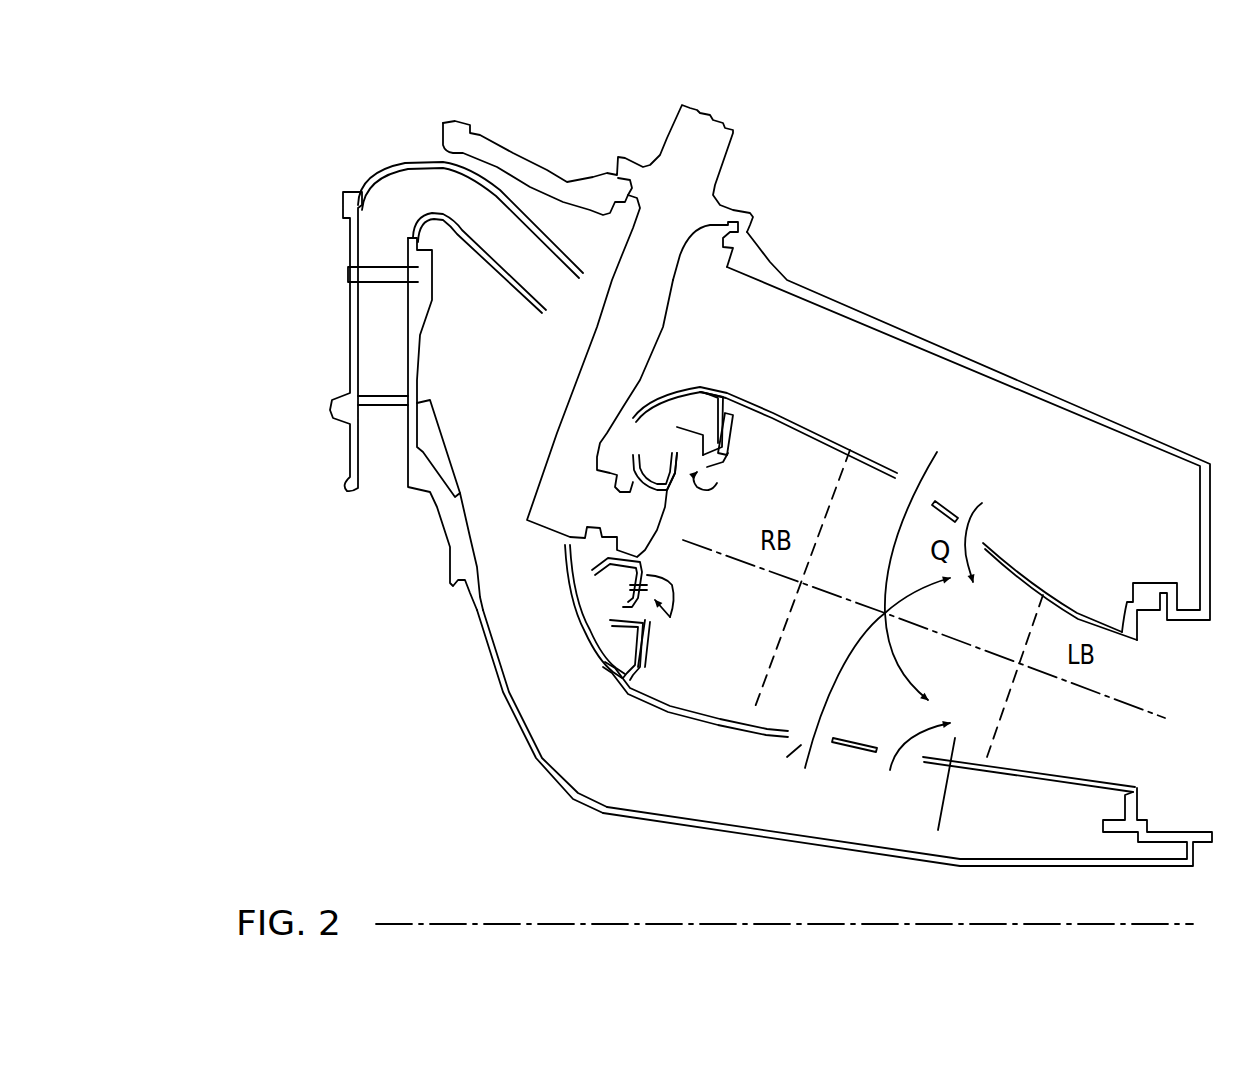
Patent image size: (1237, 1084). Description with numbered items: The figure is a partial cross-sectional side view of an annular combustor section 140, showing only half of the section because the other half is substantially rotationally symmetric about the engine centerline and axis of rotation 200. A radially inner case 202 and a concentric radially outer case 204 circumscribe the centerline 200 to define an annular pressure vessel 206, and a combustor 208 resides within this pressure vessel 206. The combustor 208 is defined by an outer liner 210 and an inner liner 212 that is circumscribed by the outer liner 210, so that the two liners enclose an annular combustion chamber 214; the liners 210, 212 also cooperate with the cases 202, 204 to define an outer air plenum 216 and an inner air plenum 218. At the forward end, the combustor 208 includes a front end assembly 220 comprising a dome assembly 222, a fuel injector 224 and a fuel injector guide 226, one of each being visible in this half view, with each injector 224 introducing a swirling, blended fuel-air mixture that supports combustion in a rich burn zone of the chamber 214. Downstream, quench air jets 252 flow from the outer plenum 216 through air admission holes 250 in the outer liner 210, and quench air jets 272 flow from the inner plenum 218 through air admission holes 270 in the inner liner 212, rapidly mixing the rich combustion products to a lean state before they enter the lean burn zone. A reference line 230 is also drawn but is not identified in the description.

The combustor section 140 is at (267, 230).
The engine centerline and axis of rotation 200 is at (532, 922).
The radially inner case 202 is at (663, 827).
The radially outer case 204 is at (877, 318).
The annular pressure vessel 206 is at (548, 758).
The combustor 208 is at (697, 722).
The outer liner 210 is at (753, 392).
The inner liner 212 is at (767, 750).
The annular combustion chamber 214 is at (754, 645).
The outer air plenum 216 is at (1119, 487).
The inner air plenum 218 is at (620, 757).
The front end assembly 220 is at (548, 415).
The dome assembly 222 is at (565, 588).
The fuel injector 224 is at (543, 453).
The fuel injector guide 226 is at (650, 478).
The reference axis 230 is at (1114, 697).
The air admission holes 250 is at (927, 498).
The quench air jets 252 is at (883, 570).
The air admission holes 270 is at (813, 748).
The quench air jets 272 is at (833, 678).